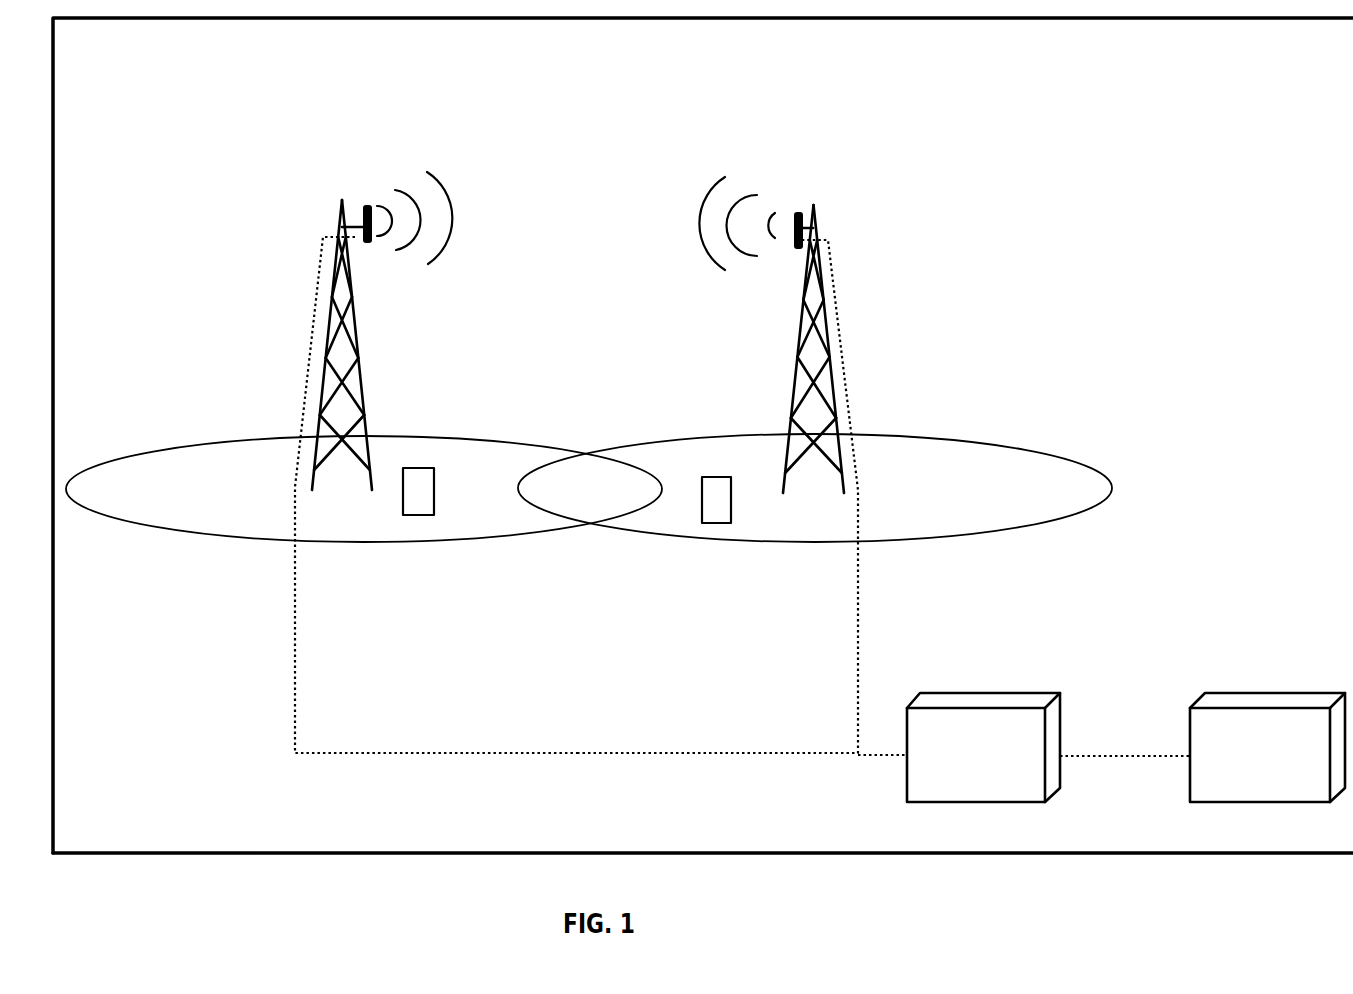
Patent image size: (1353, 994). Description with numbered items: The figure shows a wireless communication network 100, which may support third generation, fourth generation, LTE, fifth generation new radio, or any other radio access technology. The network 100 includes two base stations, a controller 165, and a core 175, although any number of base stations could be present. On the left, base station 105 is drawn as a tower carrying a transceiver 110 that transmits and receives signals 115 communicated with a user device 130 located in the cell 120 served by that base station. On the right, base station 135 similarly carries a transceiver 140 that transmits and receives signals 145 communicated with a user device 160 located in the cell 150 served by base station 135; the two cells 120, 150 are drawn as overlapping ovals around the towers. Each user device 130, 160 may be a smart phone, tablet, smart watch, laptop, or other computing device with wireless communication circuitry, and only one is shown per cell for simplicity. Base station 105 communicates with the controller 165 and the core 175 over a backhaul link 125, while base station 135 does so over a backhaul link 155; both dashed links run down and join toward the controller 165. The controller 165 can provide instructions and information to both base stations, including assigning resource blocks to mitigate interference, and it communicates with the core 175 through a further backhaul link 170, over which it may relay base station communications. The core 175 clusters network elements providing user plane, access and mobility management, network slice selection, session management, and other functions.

The wireless communication network 100 is at (541, 66).
The base station 105 is at (362, 383).
The transceiver 110 is at (368, 204).
The signals 115 is at (428, 264).
The cell 120 is at (238, 541).
The backhaul link 125 is at (294, 660).
The user device 130 is at (418, 468).
The base station 135 is at (793, 387).
The transceiver 140 is at (799, 210).
The signals 145 is at (725, 270).
The cell 150 is at (720, 432).
The backhaul link 155 is at (858, 628).
The user device 160 is at (715, 476).
The controller 165 is at (1010, 700).
The backhaul link 170 is at (1171, 754).
The core 175 is at (1275, 698).